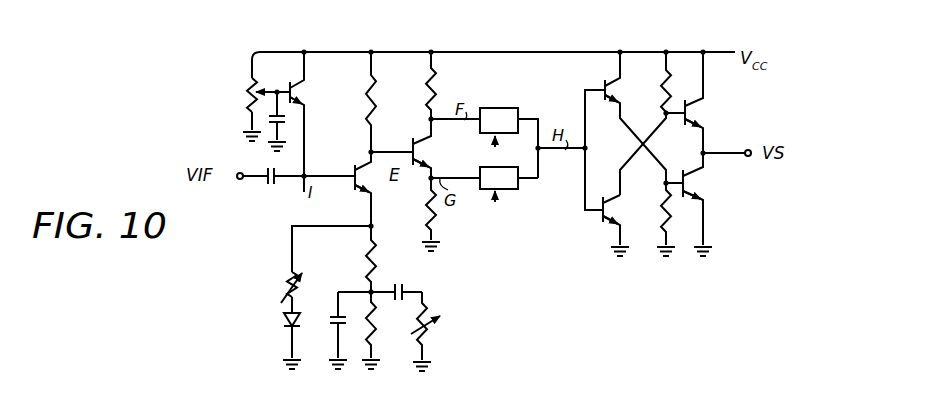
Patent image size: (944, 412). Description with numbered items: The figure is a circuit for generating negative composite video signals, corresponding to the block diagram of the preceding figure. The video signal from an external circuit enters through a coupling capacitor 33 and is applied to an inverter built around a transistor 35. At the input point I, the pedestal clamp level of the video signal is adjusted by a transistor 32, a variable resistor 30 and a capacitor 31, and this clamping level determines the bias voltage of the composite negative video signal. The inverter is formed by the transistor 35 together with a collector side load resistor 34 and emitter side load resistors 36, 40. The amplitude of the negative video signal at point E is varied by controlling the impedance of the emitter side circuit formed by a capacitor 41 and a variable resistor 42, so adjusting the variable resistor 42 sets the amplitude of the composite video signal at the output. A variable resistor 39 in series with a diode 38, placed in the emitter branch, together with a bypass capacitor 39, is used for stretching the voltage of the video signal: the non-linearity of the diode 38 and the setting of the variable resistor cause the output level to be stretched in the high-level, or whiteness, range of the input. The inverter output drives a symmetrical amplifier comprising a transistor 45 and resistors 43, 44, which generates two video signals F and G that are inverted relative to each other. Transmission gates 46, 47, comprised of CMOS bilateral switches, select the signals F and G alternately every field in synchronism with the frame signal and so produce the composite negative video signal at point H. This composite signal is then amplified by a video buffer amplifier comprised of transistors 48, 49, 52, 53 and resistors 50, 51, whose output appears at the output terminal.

The variable resistor 30 is at (248, 95).
The capacitor 31 is at (287, 124).
The transistor 32 is at (307, 97).
The coupling capacitor 33 is at (268, 187).
The collector side load resistor 34 is at (392, 110).
The transistor 35 is at (362, 195).
The emitter side load resistor 36 is at (390, 256).
The diode 38 is at (285, 322).
The variable resistor / capacitor 39 is at (284, 286).
The emitter side load resistor 40 is at (376, 320).
The capacitor 41 is at (397, 284).
The variable resistor 42 is at (436, 336).
The resistor 43 is at (434, 230).
The resistor 44 is at (436, 104).
The transistor 45 is at (420, 150).
The transmission gate 46 is at (518, 108).
The transmission gate 47 is at (518, 189).
The transistor 48 is at (612, 90).
The transistor 49 is at (609, 219).
The resistor 50 is at (690, 90).
The resistor 51 is at (659, 222).
The transistor 52 is at (690, 112).
The transistor 53 is at (700, 186).